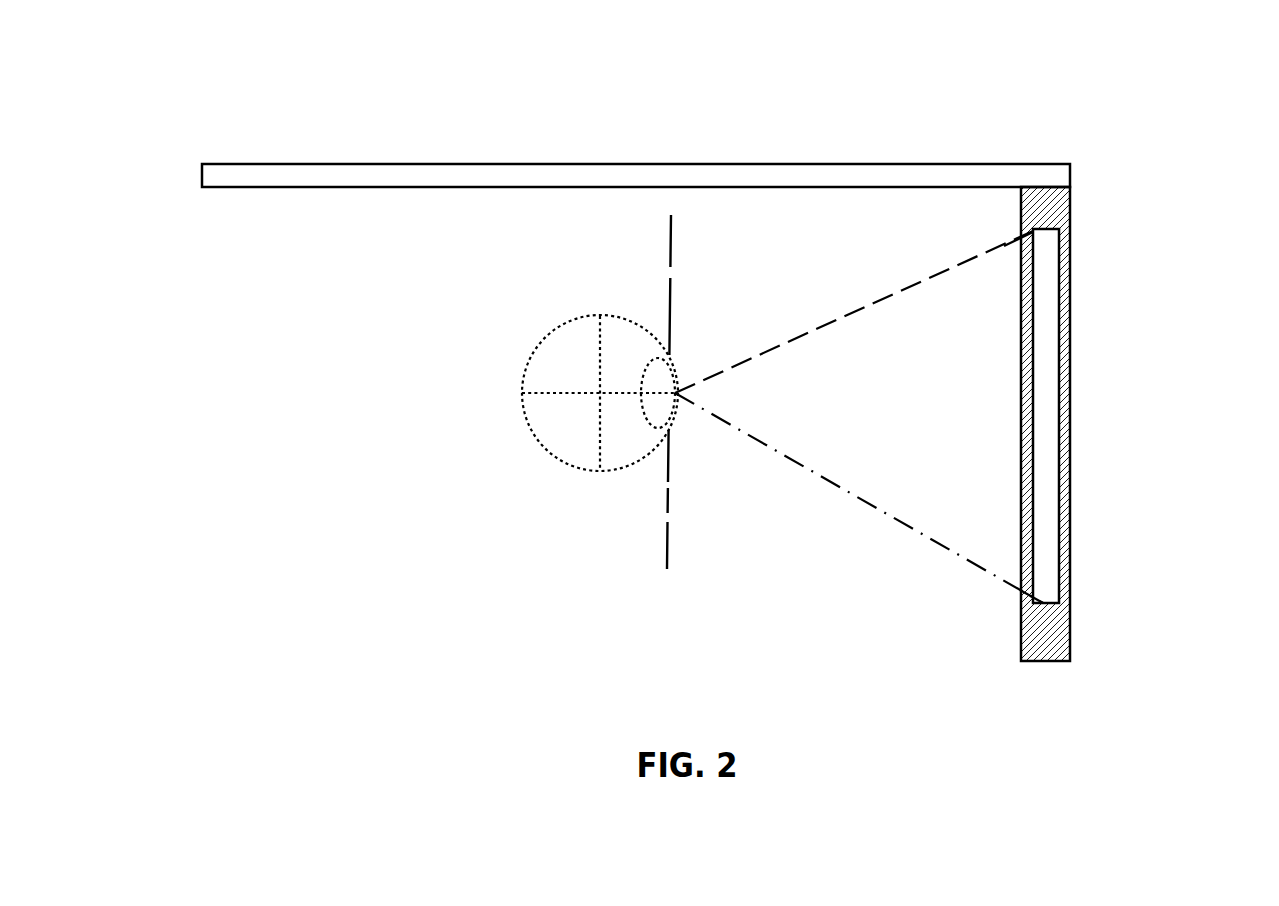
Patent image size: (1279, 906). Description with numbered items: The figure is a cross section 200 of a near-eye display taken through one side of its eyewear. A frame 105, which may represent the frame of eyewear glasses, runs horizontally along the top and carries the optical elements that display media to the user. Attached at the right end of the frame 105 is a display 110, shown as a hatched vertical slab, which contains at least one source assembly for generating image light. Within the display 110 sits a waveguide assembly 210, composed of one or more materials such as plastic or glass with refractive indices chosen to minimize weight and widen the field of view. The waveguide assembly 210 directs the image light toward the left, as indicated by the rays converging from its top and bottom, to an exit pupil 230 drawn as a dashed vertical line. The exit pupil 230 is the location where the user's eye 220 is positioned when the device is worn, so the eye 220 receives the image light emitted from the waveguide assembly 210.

The cross section 200 is at (356, 52).
The frame 105 is at (924, 163).
The display 110 is at (1071, 539).
The waveguide assembly 210 is at (1042, 303).
The eye 220 is at (562, 328).
The exit pupil 230 is at (667, 490).